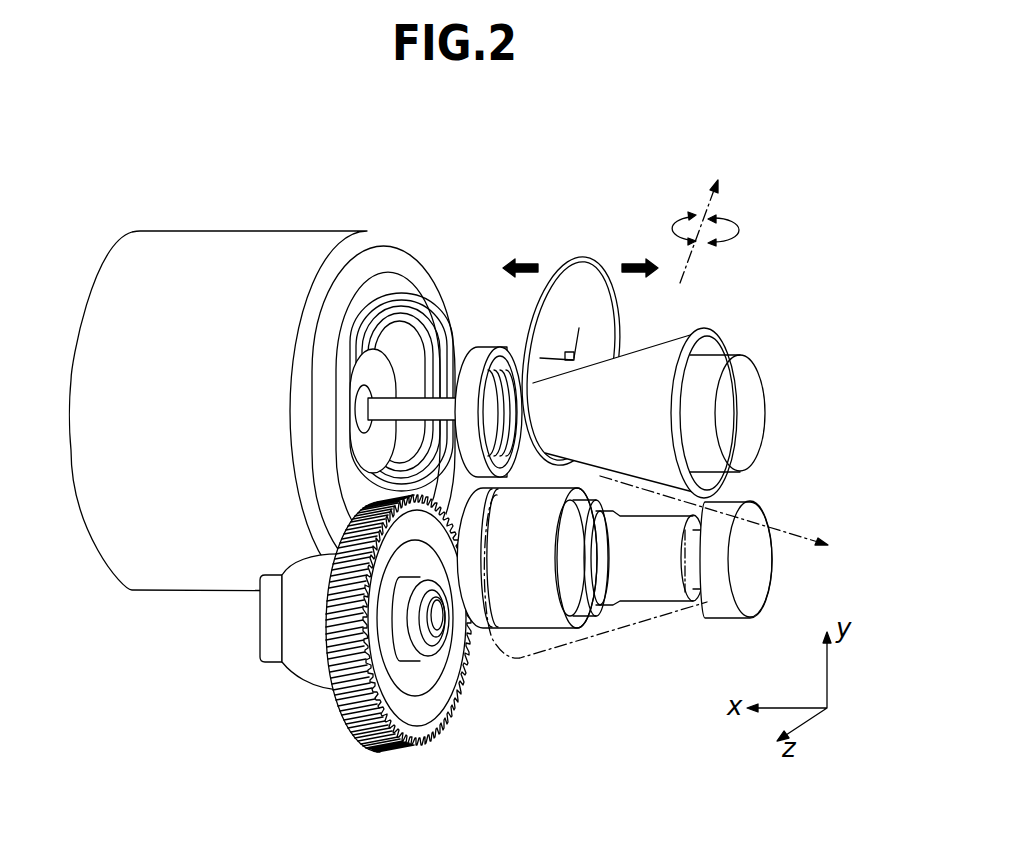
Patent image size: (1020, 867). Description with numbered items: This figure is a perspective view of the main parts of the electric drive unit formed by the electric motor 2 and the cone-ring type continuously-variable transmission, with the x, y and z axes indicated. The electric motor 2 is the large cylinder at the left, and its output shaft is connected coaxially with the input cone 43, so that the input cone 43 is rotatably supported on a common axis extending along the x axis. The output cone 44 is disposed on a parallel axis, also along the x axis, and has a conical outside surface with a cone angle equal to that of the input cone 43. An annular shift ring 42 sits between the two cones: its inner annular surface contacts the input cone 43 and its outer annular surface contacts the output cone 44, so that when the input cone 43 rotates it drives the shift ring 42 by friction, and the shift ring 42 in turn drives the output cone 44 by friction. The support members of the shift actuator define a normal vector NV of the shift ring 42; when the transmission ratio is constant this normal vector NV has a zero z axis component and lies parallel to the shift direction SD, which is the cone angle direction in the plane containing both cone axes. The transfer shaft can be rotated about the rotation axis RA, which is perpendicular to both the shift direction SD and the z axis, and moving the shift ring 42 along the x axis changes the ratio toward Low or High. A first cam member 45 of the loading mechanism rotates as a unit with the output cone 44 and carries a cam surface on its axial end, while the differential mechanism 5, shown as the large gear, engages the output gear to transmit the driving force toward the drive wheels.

The electric motor 2 is at (258, 216).
The differential mechanism 5 is at (296, 690).
The shift ring 42 is at (588, 260).
The input cone 43 is at (660, 363).
The output cone 44 is at (593, 640).
The first cam member 45 is at (643, 594).
The normal vector NV is at (530, 355).
The rotation axis RA is at (705, 214).
The shift direction SD is at (735, 520).